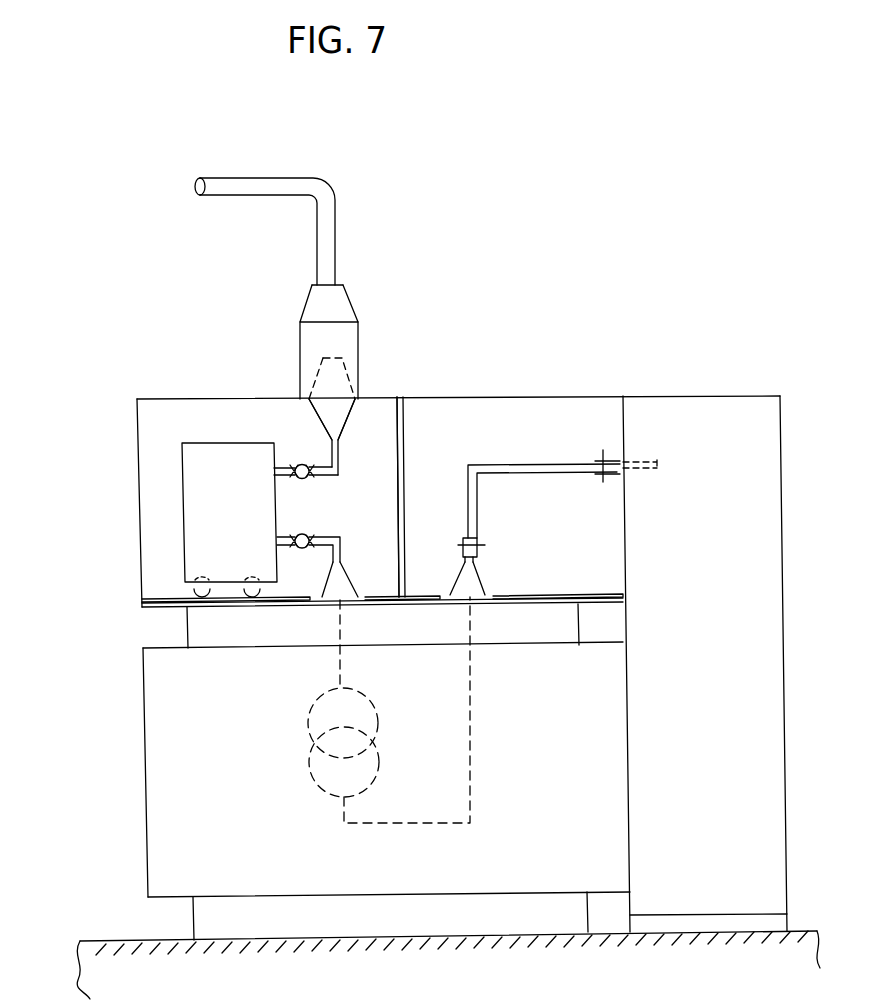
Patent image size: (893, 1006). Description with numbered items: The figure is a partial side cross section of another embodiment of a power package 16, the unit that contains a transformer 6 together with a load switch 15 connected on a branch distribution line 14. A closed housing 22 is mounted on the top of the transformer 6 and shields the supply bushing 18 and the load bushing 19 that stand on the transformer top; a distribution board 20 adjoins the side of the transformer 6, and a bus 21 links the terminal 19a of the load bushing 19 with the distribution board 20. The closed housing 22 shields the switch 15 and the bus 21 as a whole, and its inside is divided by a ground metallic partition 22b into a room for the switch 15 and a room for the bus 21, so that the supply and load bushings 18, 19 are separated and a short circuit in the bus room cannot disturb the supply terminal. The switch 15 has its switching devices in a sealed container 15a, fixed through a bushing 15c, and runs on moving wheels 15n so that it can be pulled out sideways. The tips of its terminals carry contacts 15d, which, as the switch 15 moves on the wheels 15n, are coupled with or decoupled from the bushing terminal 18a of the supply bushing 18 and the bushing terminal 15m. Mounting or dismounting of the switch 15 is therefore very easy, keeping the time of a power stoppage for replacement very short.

The transformer 6 is at (146, 855).
The branch distribution line 14 is at (330, 186).
The switch 15 is at (197, 493).
The sealed container 15a is at (135, 415).
The bushing 15c is at (353, 410).
The contact 15d is at (295, 463).
The bushing terminal 15m is at (348, 448).
The moving wheels 15n is at (197, 592).
The power package 16 is at (563, 222).
The supply bushing 18 is at (337, 547).
The bushing terminal 18a is at (335, 560).
The load bushing 19 is at (450, 587).
The terminal 19a is at (457, 540).
The distribution board 20 is at (680, 393).
The bus 21 is at (570, 463).
The closed housing 22 is at (557, 397).
The ground metallic partition 22b is at (407, 443).